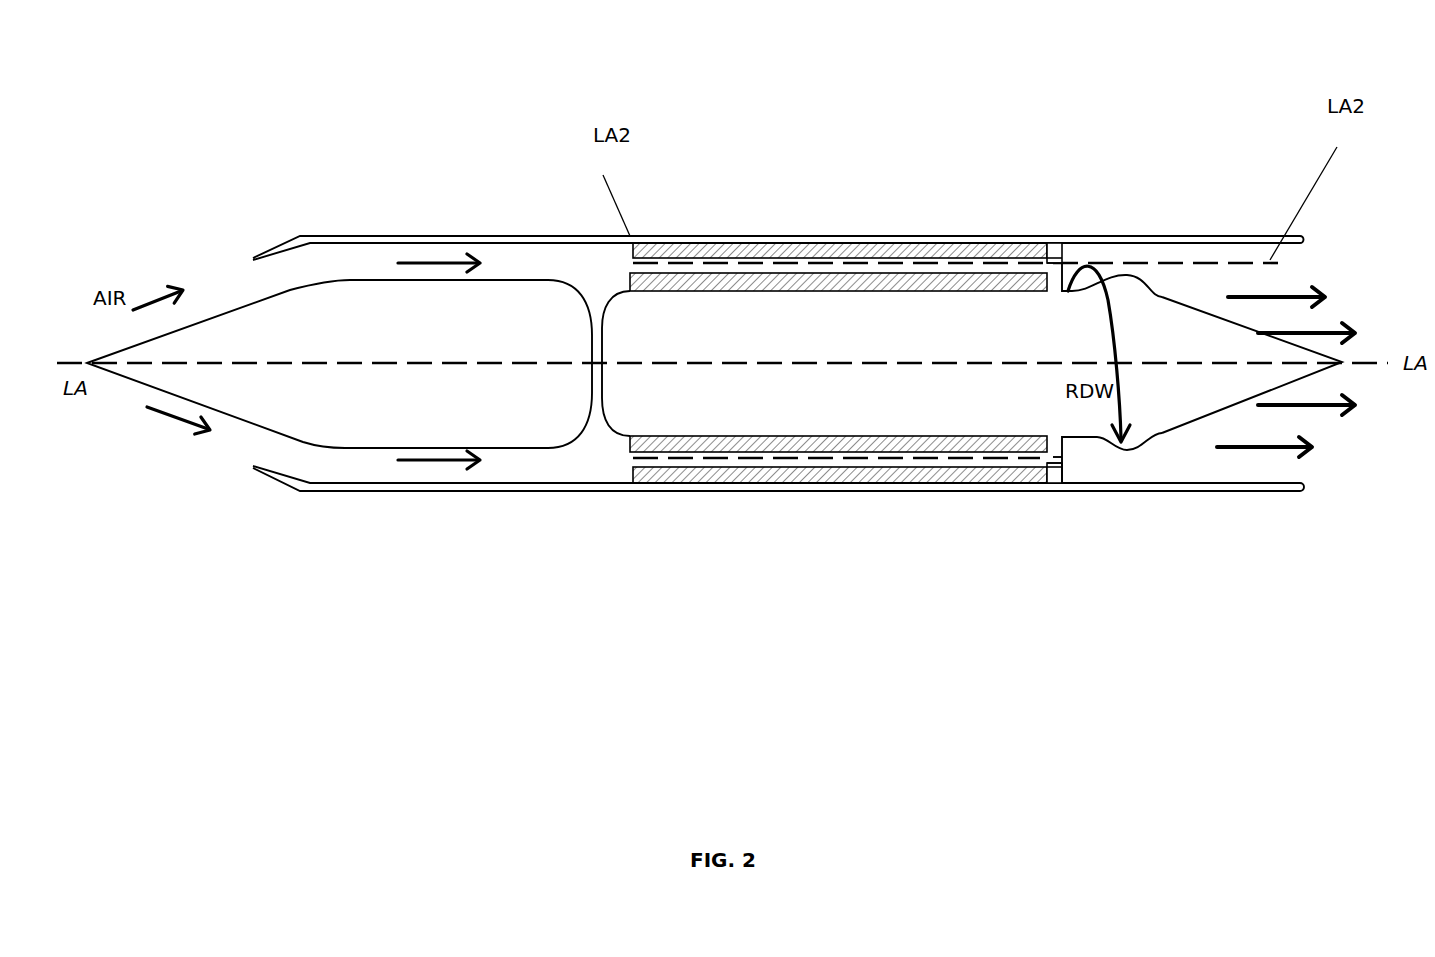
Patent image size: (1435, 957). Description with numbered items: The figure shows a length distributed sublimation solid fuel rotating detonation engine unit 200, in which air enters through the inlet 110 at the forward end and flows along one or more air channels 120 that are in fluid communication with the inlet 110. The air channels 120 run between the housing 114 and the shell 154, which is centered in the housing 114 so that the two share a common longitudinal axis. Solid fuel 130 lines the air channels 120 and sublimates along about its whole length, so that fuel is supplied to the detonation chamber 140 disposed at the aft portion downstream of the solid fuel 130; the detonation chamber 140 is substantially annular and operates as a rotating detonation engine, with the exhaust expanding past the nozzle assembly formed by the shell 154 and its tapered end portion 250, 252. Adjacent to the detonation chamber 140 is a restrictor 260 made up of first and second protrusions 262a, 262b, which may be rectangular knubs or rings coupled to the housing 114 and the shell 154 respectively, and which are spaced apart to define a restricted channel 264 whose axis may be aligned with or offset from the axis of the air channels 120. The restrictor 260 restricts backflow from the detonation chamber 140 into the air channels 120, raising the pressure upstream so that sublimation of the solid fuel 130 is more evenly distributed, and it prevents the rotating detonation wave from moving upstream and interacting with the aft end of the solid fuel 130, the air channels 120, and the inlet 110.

The inlet 110 is at (245, 282).
The housing 114 is at (410, 235).
The air channels 120 is at (695, 262).
The solid fuel 130 is at (773, 253).
The detonation chamber 140 is at (1075, 263).
The shell 154 is at (757, 433).
The length distributed sublimation SFRDE unit 200 is at (668, 547).
The aft body 250 is at (1172, 275).
The aft body conical surface 252 is at (1203, 330).
The restrictor 260 is at (1056, 243).
The first protrusion 262a is at (1057, 262).
The second protrusion 262b is at (1055, 266).
The restricted channel 264 is at (1062, 455).